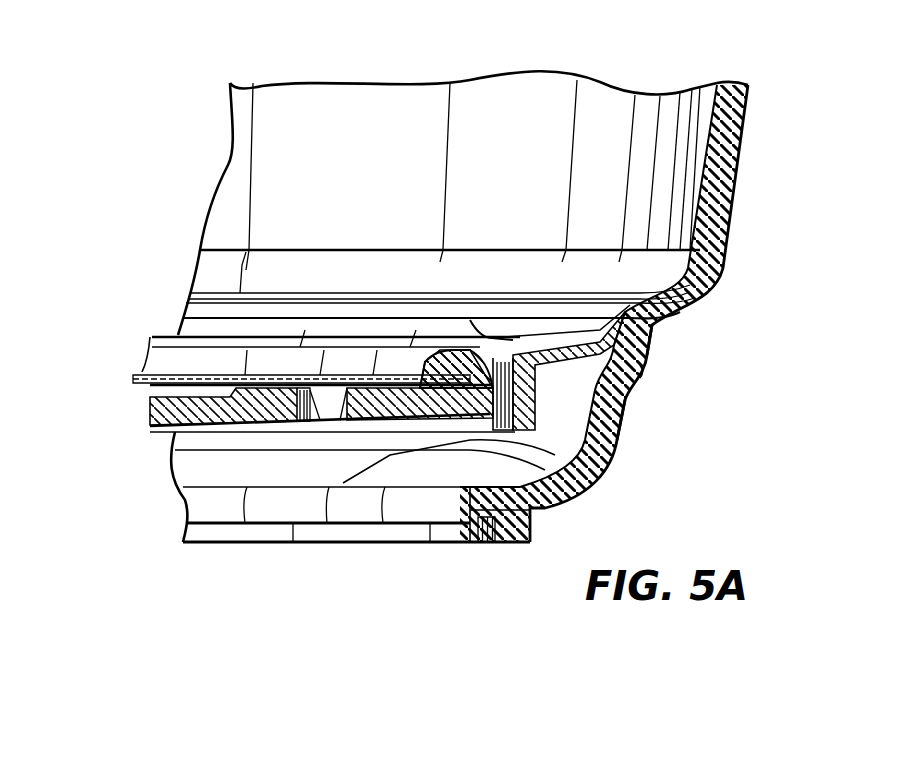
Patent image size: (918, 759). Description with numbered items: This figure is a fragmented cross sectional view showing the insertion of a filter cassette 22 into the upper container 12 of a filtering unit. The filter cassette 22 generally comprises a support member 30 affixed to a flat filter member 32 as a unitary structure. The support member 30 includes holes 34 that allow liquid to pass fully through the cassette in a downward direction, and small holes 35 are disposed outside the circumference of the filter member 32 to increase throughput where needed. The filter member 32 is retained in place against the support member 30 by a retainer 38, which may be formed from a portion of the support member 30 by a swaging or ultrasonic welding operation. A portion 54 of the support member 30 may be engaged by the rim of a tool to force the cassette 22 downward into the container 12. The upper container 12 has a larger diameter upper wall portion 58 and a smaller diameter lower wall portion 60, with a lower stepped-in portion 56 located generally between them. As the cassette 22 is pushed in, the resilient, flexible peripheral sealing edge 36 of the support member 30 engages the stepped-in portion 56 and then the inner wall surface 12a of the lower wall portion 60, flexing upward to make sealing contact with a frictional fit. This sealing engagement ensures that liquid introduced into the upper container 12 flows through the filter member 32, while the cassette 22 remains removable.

The upper container 12 is at (352, 197).
The inner wall surface 12a is at (695, 125).
The filter cassette 22 is at (115, 302).
The support member 30 is at (235, 412).
The filter member 32 is at (138, 372).
The holes 34 is at (322, 410).
The small holes 35 is at (535, 508).
The peripheral sealing edge 36 is at (555, 350).
The retainer 38 is at (453, 350).
The portion of support member 54 is at (618, 410).
The lower stepped-in portion 56 is at (652, 370).
The upper wall portion 58 is at (720, 200).
The lower wall portion 60 is at (638, 373).